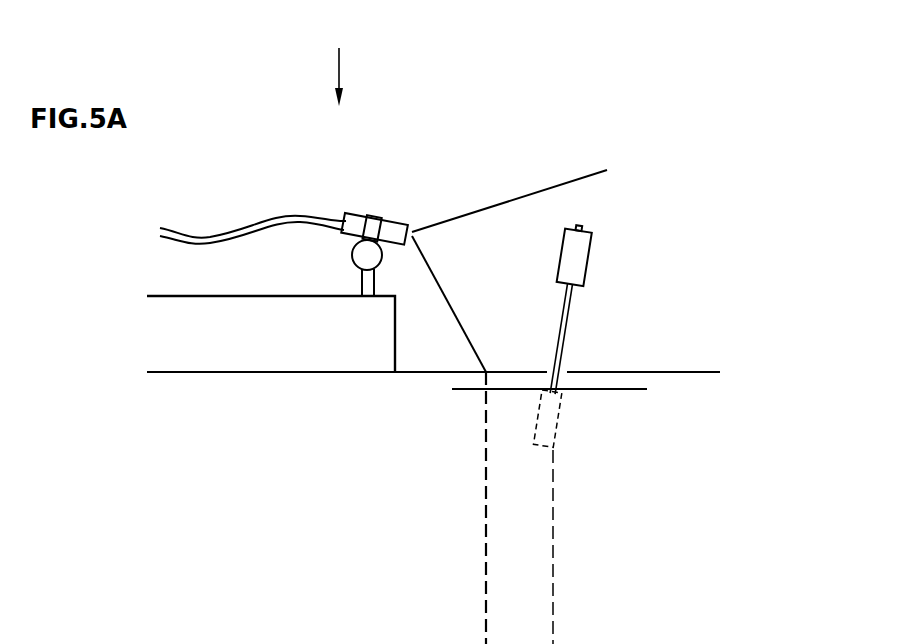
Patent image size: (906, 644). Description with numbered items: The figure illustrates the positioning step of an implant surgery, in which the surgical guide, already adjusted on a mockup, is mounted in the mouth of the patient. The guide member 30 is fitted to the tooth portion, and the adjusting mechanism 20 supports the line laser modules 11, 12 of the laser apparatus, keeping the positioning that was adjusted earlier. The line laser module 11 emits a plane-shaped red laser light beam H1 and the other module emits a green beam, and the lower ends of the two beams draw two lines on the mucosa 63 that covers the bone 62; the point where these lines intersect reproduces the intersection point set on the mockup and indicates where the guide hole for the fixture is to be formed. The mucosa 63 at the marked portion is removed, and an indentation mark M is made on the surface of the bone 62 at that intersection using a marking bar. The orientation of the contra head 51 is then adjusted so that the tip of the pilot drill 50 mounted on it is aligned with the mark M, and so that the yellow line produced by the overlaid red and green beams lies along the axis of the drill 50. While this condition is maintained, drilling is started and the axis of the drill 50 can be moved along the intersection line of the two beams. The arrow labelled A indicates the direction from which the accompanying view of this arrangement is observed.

The line laser module 11 is at (376, 212).
The line laser module 12 is at (374, 229).
The adjusting mechanism 20 is at (328, 252).
The guide member 30 is at (269, 350).
The drill 50 is at (572, 302).
The contra head 51 is at (592, 248).
The bone 62 is at (647, 442).
The mucosa 63 is at (627, 383).
The A direction A is at (339, 58).
The laser light beam H1 is at (534, 190).
The indentation mark M is at (553, 392).